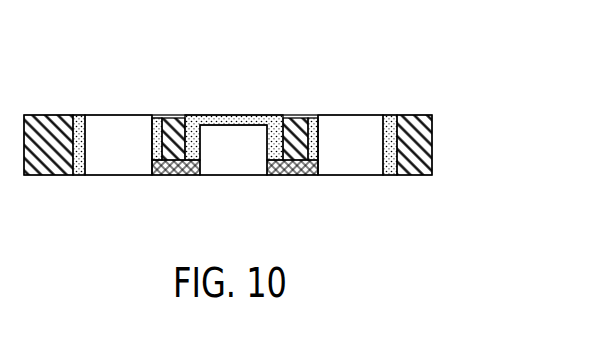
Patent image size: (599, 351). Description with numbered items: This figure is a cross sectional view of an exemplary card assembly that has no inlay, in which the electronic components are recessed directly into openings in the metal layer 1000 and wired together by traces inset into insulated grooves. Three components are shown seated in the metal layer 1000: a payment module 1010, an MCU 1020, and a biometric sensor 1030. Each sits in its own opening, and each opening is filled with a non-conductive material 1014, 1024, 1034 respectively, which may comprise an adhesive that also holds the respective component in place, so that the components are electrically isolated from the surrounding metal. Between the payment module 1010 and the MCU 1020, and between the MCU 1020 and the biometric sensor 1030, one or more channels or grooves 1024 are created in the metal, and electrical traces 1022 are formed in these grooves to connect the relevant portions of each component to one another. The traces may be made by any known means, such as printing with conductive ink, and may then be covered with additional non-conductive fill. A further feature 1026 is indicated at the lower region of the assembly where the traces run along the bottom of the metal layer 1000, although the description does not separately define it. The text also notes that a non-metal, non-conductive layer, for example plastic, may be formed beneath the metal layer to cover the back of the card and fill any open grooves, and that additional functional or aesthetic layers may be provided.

The metal layer 1000 is at (433, 145).
The payment module 1010 is at (360, 115).
The non-conductive material 1014 is at (315, 115).
The MCU 1020 is at (228, 170).
The electrical traces 1022 is at (292, 175).
The non-conductive material 1024 is at (273, 118).
The sidewall 1026 is at (320, 175).
The biometric sensor 1030 is at (130, 120).
The non-conductive material 1034 is at (80, 120).